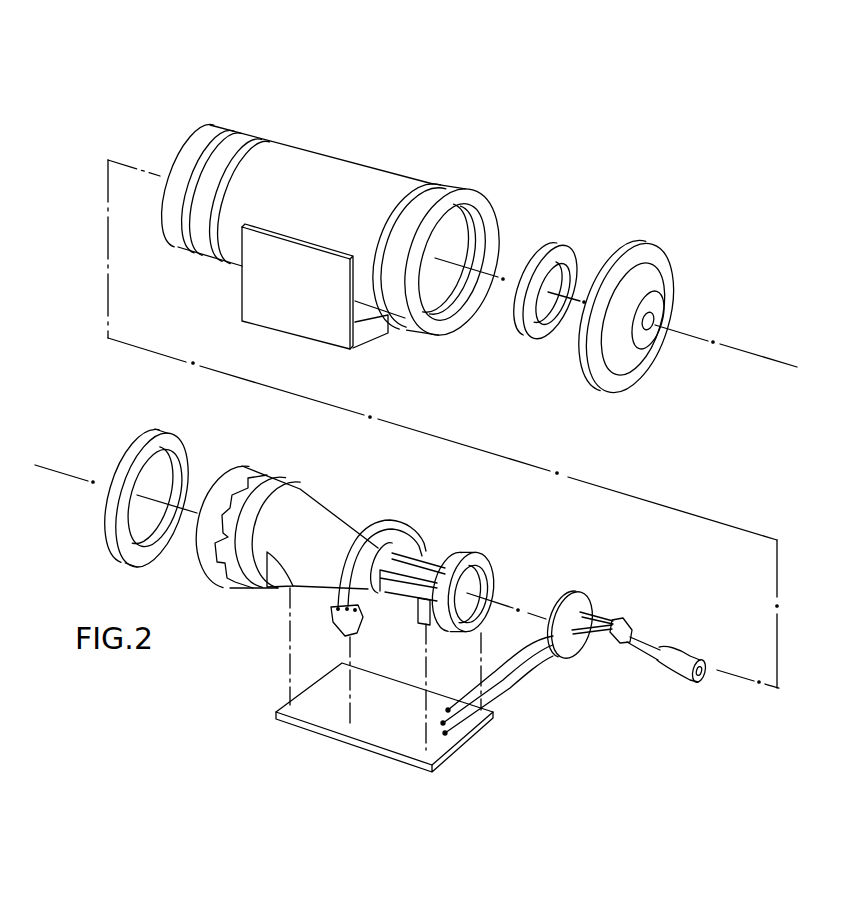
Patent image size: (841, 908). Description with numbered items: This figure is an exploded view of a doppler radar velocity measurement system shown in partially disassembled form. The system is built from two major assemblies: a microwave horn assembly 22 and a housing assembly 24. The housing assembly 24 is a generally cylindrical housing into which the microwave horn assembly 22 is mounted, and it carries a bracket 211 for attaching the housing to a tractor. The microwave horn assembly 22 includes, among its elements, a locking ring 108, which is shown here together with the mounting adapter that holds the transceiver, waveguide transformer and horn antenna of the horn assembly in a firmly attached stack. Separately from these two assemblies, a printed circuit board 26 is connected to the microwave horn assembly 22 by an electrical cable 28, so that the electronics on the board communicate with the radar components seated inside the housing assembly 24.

The housing assembly 24 is at (380, 158).
The locking ring 108 is at (556, 244).
The bracket 211 is at (328, 330).
The microwave horn assembly 22 is at (312, 487).
The electrical cable 28 is at (403, 522).
The printed circuit board 26 is at (462, 731).